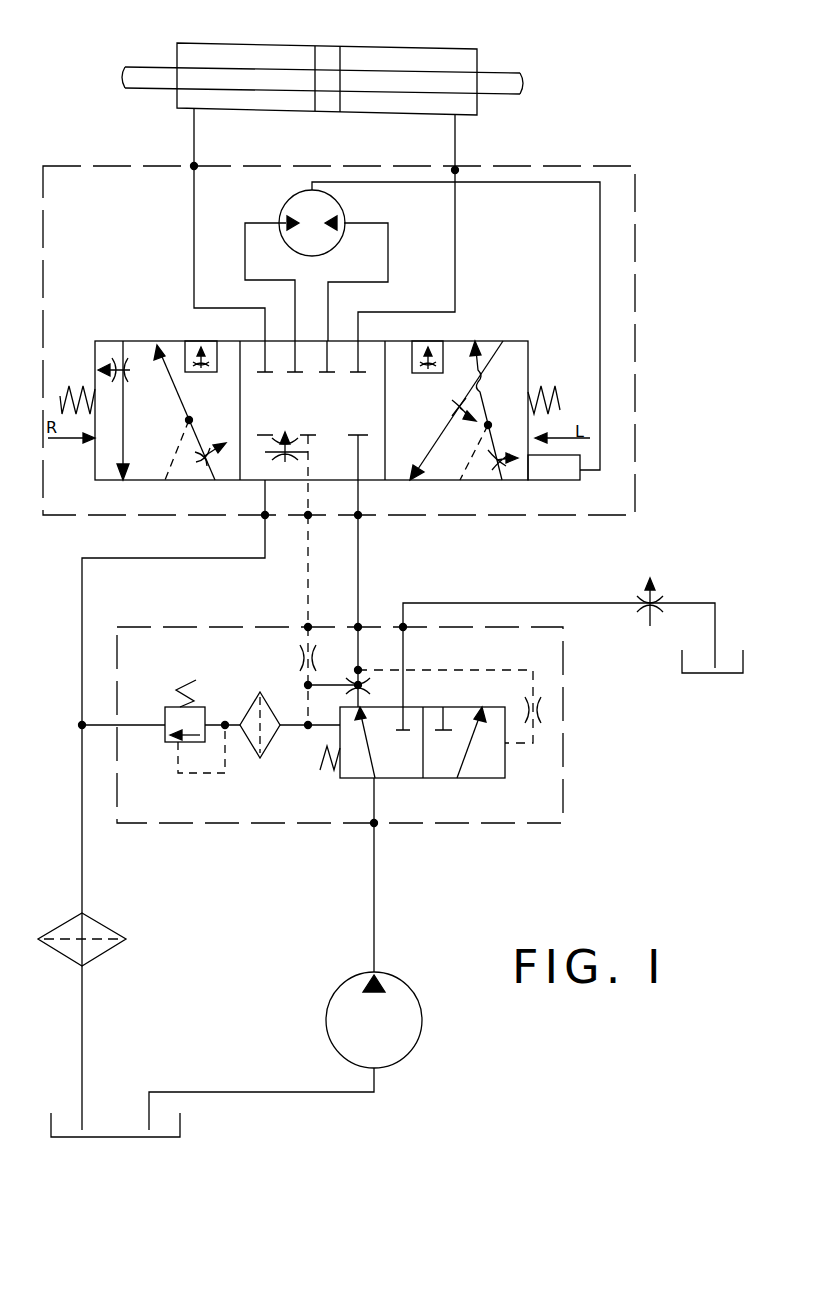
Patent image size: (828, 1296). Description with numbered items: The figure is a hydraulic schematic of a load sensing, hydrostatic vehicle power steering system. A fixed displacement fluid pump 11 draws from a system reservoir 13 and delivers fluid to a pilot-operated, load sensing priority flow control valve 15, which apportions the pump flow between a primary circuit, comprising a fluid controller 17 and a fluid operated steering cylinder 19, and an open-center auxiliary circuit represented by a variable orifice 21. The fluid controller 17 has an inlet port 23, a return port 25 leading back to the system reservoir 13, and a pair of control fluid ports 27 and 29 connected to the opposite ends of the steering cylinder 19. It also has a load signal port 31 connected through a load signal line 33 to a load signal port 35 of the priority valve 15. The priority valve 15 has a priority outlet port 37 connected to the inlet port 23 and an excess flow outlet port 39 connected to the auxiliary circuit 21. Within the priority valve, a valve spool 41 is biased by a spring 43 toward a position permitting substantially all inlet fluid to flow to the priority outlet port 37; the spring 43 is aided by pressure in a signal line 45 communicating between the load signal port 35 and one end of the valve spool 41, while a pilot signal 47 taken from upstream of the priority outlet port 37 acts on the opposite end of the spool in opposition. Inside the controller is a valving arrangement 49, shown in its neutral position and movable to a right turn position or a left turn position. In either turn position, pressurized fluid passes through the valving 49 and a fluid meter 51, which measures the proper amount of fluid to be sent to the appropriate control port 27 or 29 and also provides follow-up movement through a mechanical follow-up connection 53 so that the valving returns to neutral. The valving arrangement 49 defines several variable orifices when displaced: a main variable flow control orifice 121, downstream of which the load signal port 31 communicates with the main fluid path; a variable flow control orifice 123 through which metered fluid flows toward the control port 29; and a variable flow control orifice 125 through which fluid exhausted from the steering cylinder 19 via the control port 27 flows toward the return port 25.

The fluid pump 11 is at (330, 1000).
The system reservoir 13 is at (740, 674).
The priority flow control valve 15 is at (468, 838).
The fluid controller 17 is at (637, 166).
The steering cylinder 19 is at (218, 43).
The variable orifice 21 is at (640, 602).
The inlet port 23 is at (358, 518).
The return port 25 is at (264, 518).
The control fluid port 27 is at (192, 166).
The control fluid port 29 is at (455, 170).
The load signal port 31 is at (323, 582).
The load signal line 33 is at (306, 606).
The load signal port 35 is at (308, 627).
The priority outlet port 37 is at (358, 627).
The excess flow outlet port 39 is at (403, 627).
The valve spool 41 is at (522, 765).
The spring 43 is at (332, 772).
The signal line 45 is at (294, 732).
The pilot signal 47 is at (450, 670).
The valving arrangement 49 is at (520, 336).
The fluid meter 51 is at (282, 210).
The mechanical follow-up connection 53 is at (599, 256).
The main variable flow control orifice 121 is at (210, 478).
The variable flow control orifice 123 is at (192, 348).
The variable flow control orifice 125 is at (110, 346).